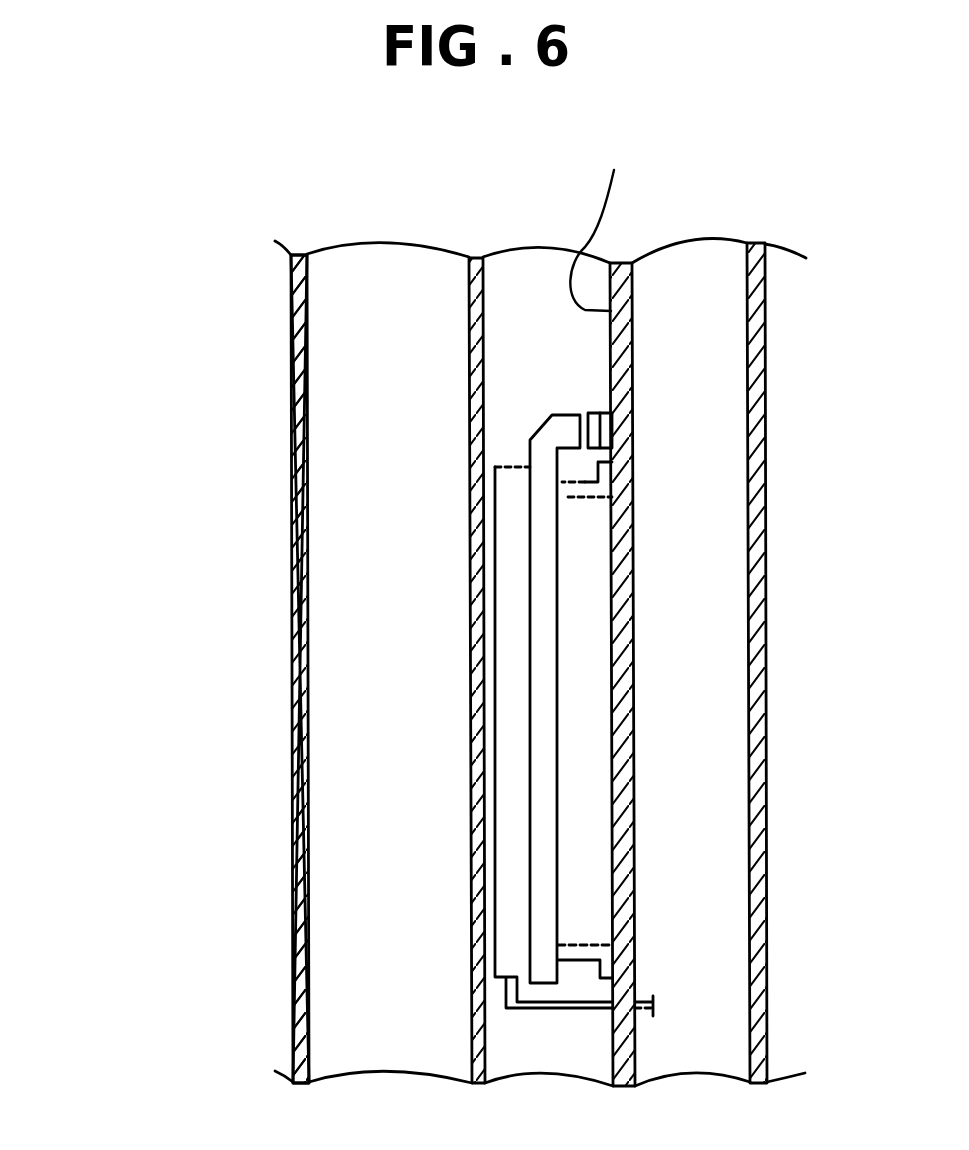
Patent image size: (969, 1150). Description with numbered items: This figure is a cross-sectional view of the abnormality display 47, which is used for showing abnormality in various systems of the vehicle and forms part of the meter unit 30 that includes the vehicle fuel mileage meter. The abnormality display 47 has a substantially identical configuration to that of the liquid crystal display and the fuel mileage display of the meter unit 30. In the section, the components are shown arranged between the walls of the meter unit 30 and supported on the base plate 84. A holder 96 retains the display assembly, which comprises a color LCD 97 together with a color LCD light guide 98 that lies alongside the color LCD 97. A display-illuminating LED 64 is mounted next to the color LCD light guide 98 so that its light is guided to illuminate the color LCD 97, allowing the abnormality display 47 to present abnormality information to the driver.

The meter unit 30 is at (462, 587).
The abnormality display 47 is at (352, 591).
The base plate 84 is at (602, 221).
The display-illuminating LED 64 is at (633, 372).
The holder 96 is at (720, 674).
The color LCD 97 is at (543, 818).
The color LCD light guide 98 is at (551, 422).